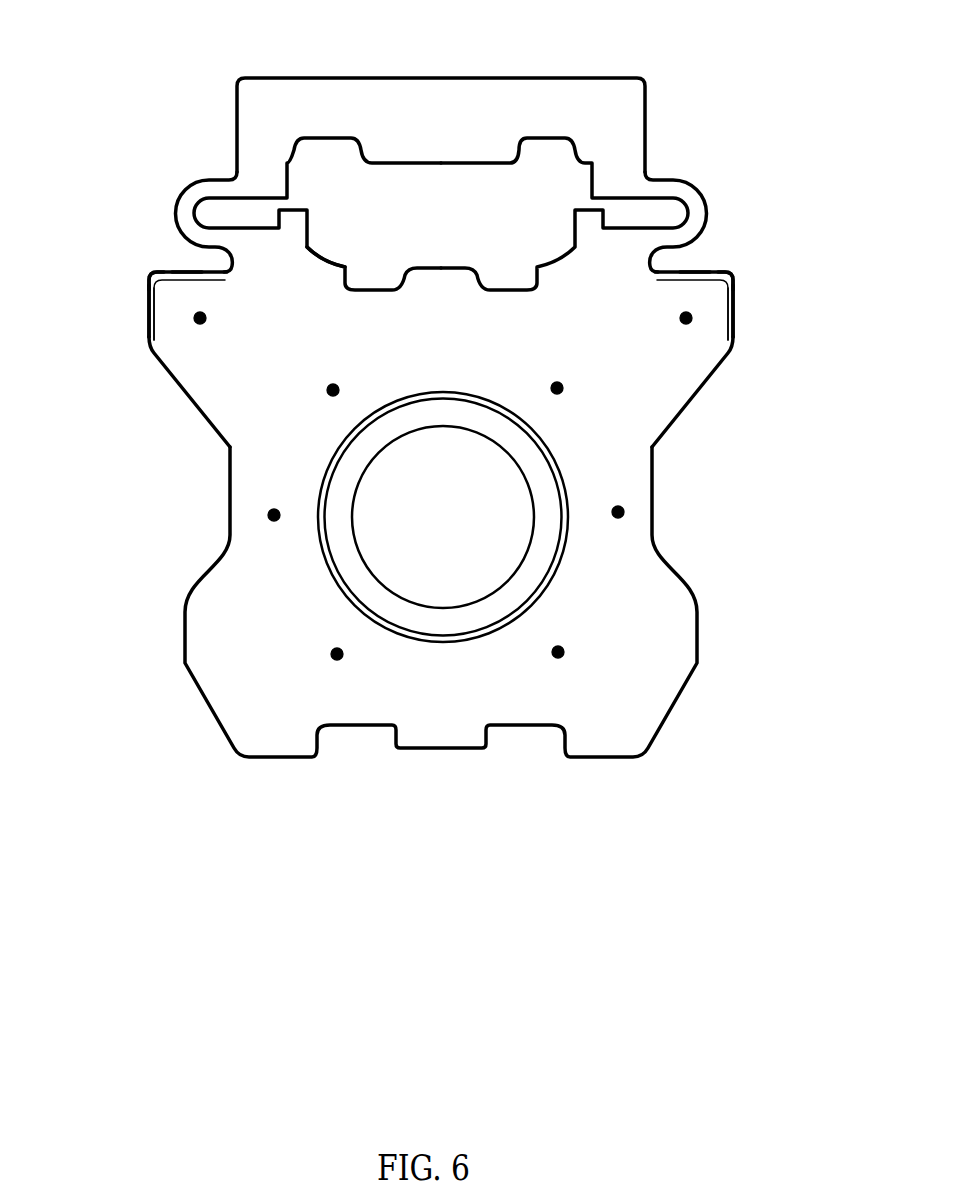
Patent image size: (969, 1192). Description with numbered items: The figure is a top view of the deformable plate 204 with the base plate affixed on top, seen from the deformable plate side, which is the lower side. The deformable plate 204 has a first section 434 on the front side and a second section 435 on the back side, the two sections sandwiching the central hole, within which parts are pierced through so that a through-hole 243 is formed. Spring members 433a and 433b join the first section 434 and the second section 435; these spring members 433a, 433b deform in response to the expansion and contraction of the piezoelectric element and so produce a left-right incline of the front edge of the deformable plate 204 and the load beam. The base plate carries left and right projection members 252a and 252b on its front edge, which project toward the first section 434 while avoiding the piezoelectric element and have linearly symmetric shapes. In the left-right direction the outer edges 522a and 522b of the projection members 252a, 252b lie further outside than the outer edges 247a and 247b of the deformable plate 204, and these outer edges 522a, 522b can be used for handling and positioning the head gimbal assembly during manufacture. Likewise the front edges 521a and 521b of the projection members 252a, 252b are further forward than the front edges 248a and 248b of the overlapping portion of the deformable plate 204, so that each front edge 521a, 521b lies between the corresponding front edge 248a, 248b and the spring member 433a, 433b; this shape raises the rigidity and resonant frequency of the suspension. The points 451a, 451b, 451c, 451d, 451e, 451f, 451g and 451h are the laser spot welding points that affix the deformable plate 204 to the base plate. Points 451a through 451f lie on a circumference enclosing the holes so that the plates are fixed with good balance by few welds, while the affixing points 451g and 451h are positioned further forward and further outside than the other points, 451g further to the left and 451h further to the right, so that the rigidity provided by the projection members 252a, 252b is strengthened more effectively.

The first section 434 is at (360, 77).
The spring member 433a is at (690, 183).
The spring member 433b is at (194, 183).
The second section 435 is at (315, 259).
The through-hole 243 is at (456, 229).
The front edge 248a is at (690, 279).
The front edge 248b is at (180, 282).
The front edge 521a is at (693, 272).
The front edge 521b is at (193, 272).
The projection member 252a is at (733, 273).
The projection member 252b is at (149, 277).
The outer edge 522a is at (735, 308).
The outer edge 522b is at (148, 318).
The outer edge 247a is at (739, 330).
The outer edge 247b is at (150, 335).
The deformable plate 204 is at (185, 625).
The laser spot welding point 451a is at (338, 385).
The laser spot welding point 451b is at (557, 388).
The laser spot welding point 451c is at (614, 509).
The laser spot welding point 451d is at (564, 650).
The laser spot welding point 451e is at (343, 652).
The laser spot welding point 451f is at (271, 522).
The affixing point 451g is at (206, 318).
The affixing point 451h is at (680, 318).